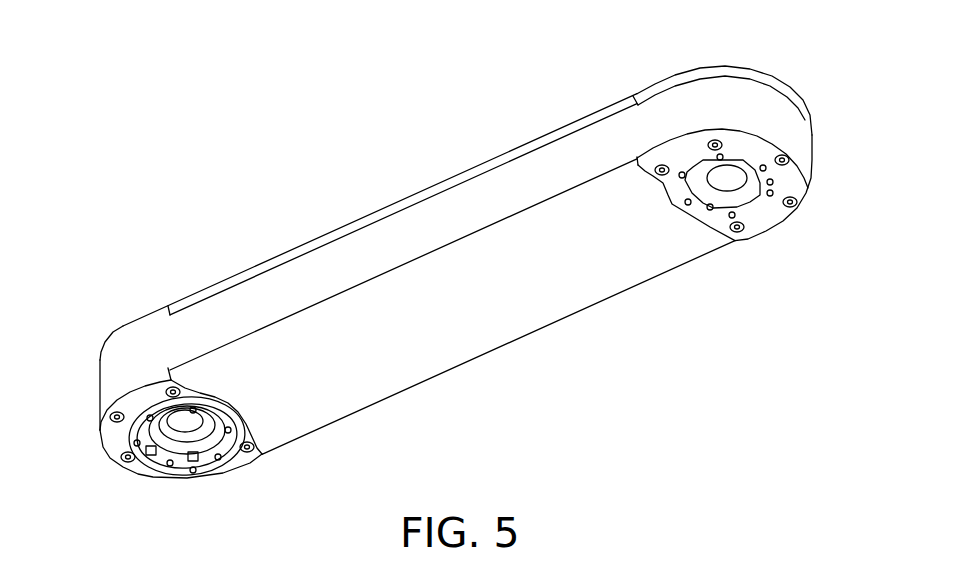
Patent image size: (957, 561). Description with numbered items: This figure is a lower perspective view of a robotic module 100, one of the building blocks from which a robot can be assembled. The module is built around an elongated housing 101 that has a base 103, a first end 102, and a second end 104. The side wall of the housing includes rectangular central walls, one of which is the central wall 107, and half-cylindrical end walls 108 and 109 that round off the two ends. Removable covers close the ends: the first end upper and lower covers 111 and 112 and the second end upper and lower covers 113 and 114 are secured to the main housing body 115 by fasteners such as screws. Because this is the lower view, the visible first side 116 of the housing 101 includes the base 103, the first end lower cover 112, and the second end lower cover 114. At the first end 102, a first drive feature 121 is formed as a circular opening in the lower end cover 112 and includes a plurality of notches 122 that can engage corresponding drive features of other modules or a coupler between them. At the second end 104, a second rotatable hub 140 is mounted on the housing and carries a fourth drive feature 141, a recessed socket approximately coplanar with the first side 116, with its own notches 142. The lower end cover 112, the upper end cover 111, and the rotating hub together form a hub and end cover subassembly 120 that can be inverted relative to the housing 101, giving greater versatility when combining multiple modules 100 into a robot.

The robotic module 100 is at (358, 92).
The elongated housing 101 is at (512, 370).
The first end 102 is at (785, 78).
The base 103 is at (470, 325).
The second end 104 is at (105, 448).
The rectangular central wall 107 is at (358, 247).
The half-cylindrical end wall 108 is at (788, 125).
The half-cylindrical end wall 109 is at (112, 377).
The first end upper cover 111 is at (735, 72).
The first end lower cover 112 is at (792, 183).
The second end upper cover 113 is at (122, 328).
The second end lower cover 114 is at (143, 470).
The main housing body 115 is at (613, 309).
The first side 116 is at (370, 438).
The hub and end cover subassembly 120 is at (474, 170).
The first drive feature 121 is at (758, 222).
The notches 122 is at (754, 202).
The second rotatable hub 140 is at (224, 395).
The fourth drive feature 141 is at (212, 445).
The notches 142 is at (177, 413).